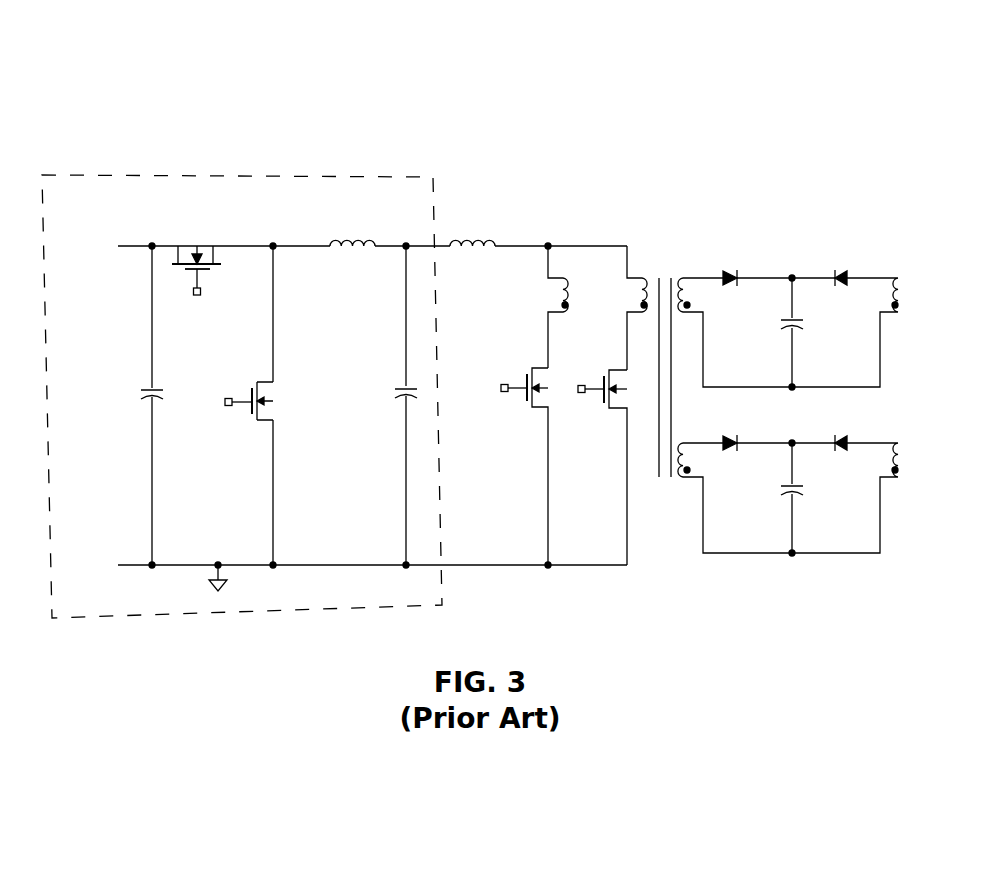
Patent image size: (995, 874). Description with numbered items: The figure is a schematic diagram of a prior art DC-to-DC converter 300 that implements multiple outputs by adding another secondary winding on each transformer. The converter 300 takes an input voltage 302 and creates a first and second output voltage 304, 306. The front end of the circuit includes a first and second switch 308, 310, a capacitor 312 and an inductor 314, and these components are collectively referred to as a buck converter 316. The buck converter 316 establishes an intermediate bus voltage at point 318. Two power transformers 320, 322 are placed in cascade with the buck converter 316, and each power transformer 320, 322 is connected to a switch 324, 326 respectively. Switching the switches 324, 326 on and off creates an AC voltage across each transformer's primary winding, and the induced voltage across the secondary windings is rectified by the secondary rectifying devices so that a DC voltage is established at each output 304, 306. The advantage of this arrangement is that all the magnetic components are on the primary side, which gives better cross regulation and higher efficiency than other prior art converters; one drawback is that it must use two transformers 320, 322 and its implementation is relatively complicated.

The converter 300 is at (196, 56).
The input voltage 302 is at (118, 246).
The first output voltage 304 is at (782, 302).
The second output voltage 306 is at (788, 465).
The first switch 308 is at (212, 297).
The second switch 310 is at (238, 434).
The capacitor 312 is at (395, 404).
The inductor 314 is at (353, 233).
The buck converter 316 is at (320, 170).
The point 318 is at (405, 250).
The power transformer 320 is at (652, 256).
The power transformer 322 is at (563, 258).
The switch 324 is at (600, 436).
The switch 326 is at (512, 436).